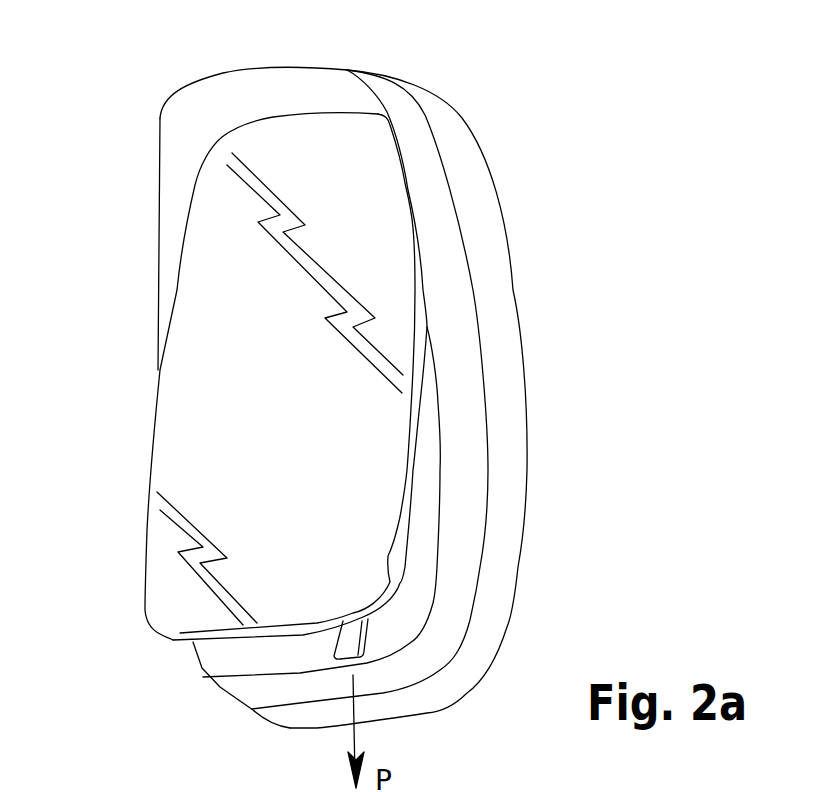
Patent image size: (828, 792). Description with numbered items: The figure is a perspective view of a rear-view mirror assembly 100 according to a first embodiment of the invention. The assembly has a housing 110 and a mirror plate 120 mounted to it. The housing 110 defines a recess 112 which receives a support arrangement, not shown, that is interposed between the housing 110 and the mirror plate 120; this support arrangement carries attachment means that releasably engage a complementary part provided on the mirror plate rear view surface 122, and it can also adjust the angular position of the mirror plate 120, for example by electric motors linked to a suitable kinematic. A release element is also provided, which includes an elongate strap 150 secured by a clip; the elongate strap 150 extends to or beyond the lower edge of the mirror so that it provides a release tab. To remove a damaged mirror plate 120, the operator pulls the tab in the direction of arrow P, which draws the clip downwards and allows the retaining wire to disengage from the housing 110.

The rear-view mirror assembly 100 is at (563, 143).
The housing 110 is at (507, 313).
The recess 112 is at (403, 173).
The mirror plate 120 is at (208, 404).
The mirror plate rear view surface 122 is at (193, 488).
The elongate strap 150 is at (335, 655).